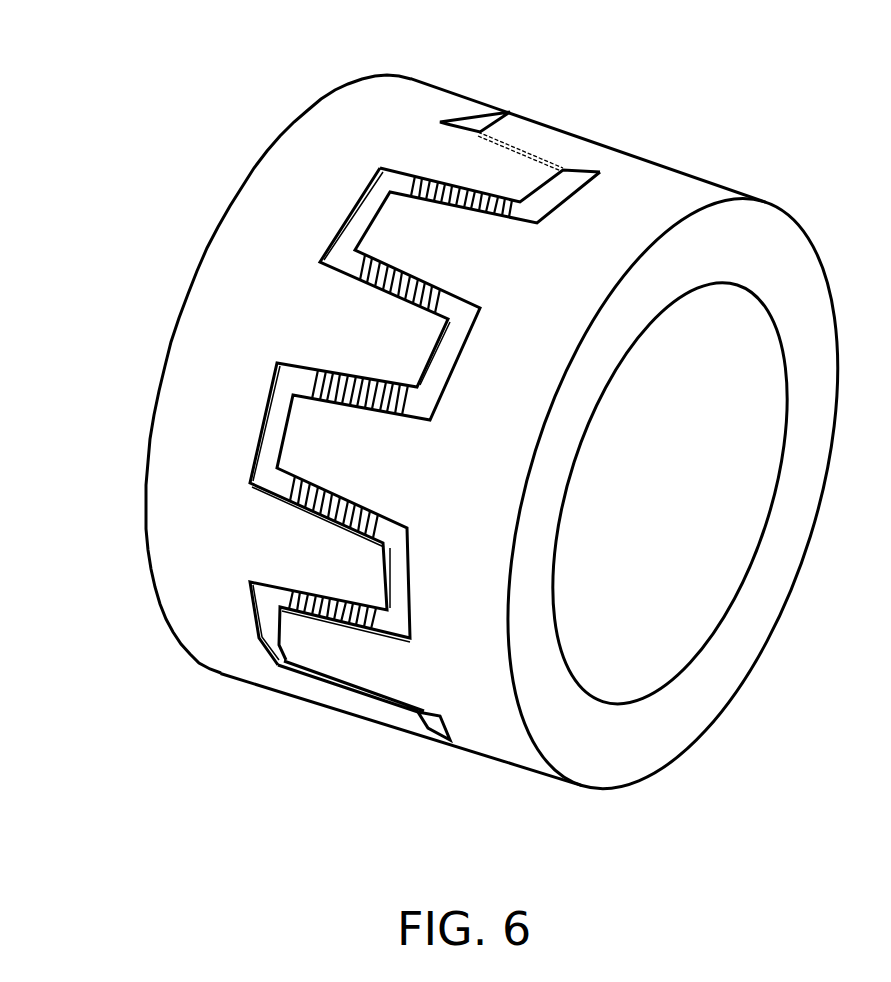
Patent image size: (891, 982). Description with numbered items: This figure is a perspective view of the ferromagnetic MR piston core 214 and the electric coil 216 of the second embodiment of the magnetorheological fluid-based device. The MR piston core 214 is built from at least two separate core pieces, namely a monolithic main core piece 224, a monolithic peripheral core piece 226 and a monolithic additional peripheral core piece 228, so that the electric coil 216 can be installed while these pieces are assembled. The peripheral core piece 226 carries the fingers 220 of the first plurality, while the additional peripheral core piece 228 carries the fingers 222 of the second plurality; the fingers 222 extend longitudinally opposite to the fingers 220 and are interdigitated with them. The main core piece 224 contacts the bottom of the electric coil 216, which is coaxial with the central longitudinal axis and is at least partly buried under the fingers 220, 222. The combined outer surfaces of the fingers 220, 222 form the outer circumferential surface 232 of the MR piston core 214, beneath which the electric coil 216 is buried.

The MR piston core 214 is at (463, 444).
The electric coil 216 is at (321, 607).
The fingers of the first plurality 220 is at (544, 180).
The fingers of the second plurality 222 is at (280, 437).
The main core piece 224 is at (712, 588).
The peripheral core piece 226 is at (167, 522).
The additional peripheral core piece 228 is at (497, 742).
The outer circumferential surface 232 is at (507, 170).